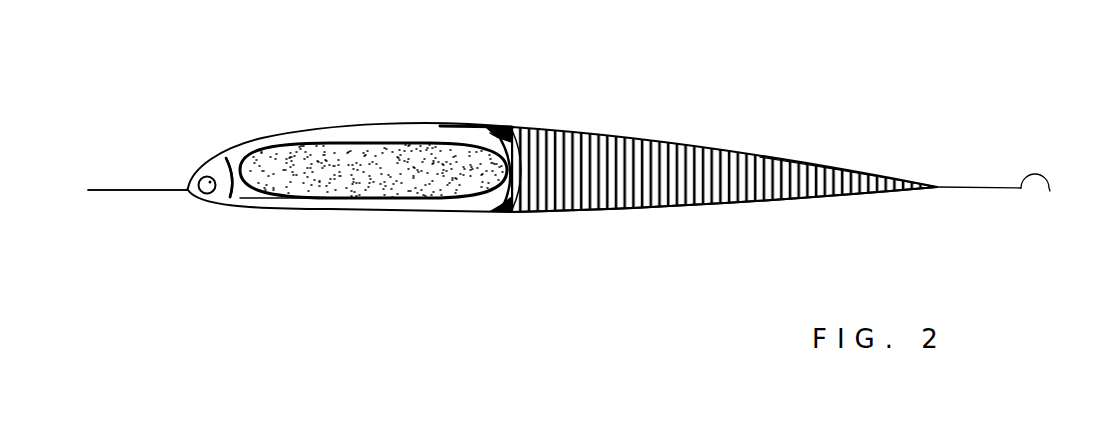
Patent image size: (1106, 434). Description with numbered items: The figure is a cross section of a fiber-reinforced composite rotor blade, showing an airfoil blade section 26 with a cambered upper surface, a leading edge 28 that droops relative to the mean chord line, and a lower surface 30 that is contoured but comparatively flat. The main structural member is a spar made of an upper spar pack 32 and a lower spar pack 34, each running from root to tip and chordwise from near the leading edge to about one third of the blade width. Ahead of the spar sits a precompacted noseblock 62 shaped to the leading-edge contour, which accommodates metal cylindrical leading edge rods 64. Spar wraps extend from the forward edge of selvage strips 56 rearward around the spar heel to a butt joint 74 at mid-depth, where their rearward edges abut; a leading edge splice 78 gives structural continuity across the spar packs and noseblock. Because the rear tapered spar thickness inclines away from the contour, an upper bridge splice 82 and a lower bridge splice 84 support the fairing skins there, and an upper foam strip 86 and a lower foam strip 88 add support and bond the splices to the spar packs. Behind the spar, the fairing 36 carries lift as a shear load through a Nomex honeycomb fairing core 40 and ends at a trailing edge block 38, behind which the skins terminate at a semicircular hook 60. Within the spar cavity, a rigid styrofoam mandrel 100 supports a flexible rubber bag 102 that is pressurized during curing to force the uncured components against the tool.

The blade aft body section 26 is at (572, 131).
The leading edge 28 is at (205, 198).
The lower surface 30 is at (636, 210).
The upper spar pack 32 is at (302, 136).
The lower spar pack 34 is at (408, 208).
The fairing 36 is at (805, 138).
The trailing edge block 38 is at (936, 186).
The fairing core 40 is at (665, 170).
The selvage strip 56 is at (123, 195).
The semicircular hook 60 is at (1043, 173).
The noseblock 62 is at (226, 200).
The leading edge rods 64 is at (197, 176).
The butt joint 74 is at (530, 145).
The leading edge splice 78 is at (228, 152).
The upper bridge splice 82 is at (486, 135).
The lower bridge splice 84 is at (467, 212).
The upper foam strip 86 is at (472, 136).
The lower foam strip 88 is at (503, 214).
The mandrel 100 is at (330, 185).
The bag 102 is at (378, 205).